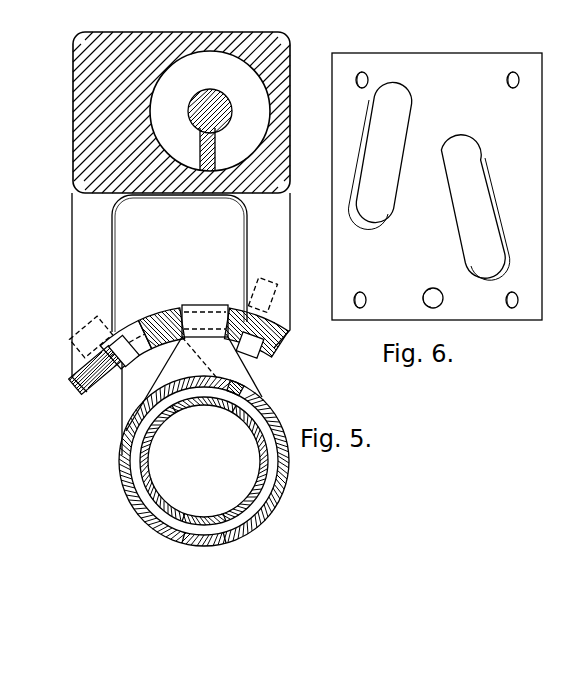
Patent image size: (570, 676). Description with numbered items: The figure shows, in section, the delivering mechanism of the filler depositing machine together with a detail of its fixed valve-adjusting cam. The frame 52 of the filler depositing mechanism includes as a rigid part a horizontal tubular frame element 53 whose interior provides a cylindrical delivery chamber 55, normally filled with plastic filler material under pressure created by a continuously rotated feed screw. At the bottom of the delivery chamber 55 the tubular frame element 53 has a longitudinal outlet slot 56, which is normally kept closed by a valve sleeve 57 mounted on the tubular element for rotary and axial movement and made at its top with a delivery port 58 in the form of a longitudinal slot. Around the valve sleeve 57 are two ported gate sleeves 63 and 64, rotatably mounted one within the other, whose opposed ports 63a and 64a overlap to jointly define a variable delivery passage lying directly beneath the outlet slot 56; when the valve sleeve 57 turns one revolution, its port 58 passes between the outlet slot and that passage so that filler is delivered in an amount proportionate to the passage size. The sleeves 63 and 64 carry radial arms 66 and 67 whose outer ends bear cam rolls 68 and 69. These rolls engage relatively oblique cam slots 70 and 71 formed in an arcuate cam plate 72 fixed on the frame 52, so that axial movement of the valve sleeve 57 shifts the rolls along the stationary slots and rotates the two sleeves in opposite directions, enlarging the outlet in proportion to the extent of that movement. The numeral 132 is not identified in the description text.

In FIG. 5, the frame 52 is at (73, 88).
In FIG. 5, the keyhole opening core 132 is at (205, 72).
In FIG. 5, the tubular frame element 53 is at (148, 449).
In FIG. 5, the delivery chamber 55 is at (204, 461).
In FIG. 5, the outlet slot 56 is at (173, 517).
In FIG. 5, the valve sleeve 57 is at (213, 523).
In FIG. 5, the delivery port 58 is at (233, 395).
In FIG. 5, the gate sleeve 63 is at (125, 455).
In FIG. 5, the port 63a is at (180, 542).
In FIG. 5, the gate sleeve 64 is at (277, 413).
In FIG. 5, the port 64a is at (227, 542).
In FIG. 5, the radial arm 66 is at (173, 336).
In FIG. 5, the radial arm 67 is at (194, 384).
In FIG. 5, the cam roll 68 is at (128, 337).
In FIG. 5, the cam roll 69 is at (208, 315).
In FIG. 6, the cam slot 70 is at (379, 155).
In FIG. 6, the cam slot 71 is at (475, 207).
In FIG. 5, the cam plate 72 is at (170, 312).
In FIG. 6, the cam plate 72 is at (437, 186).